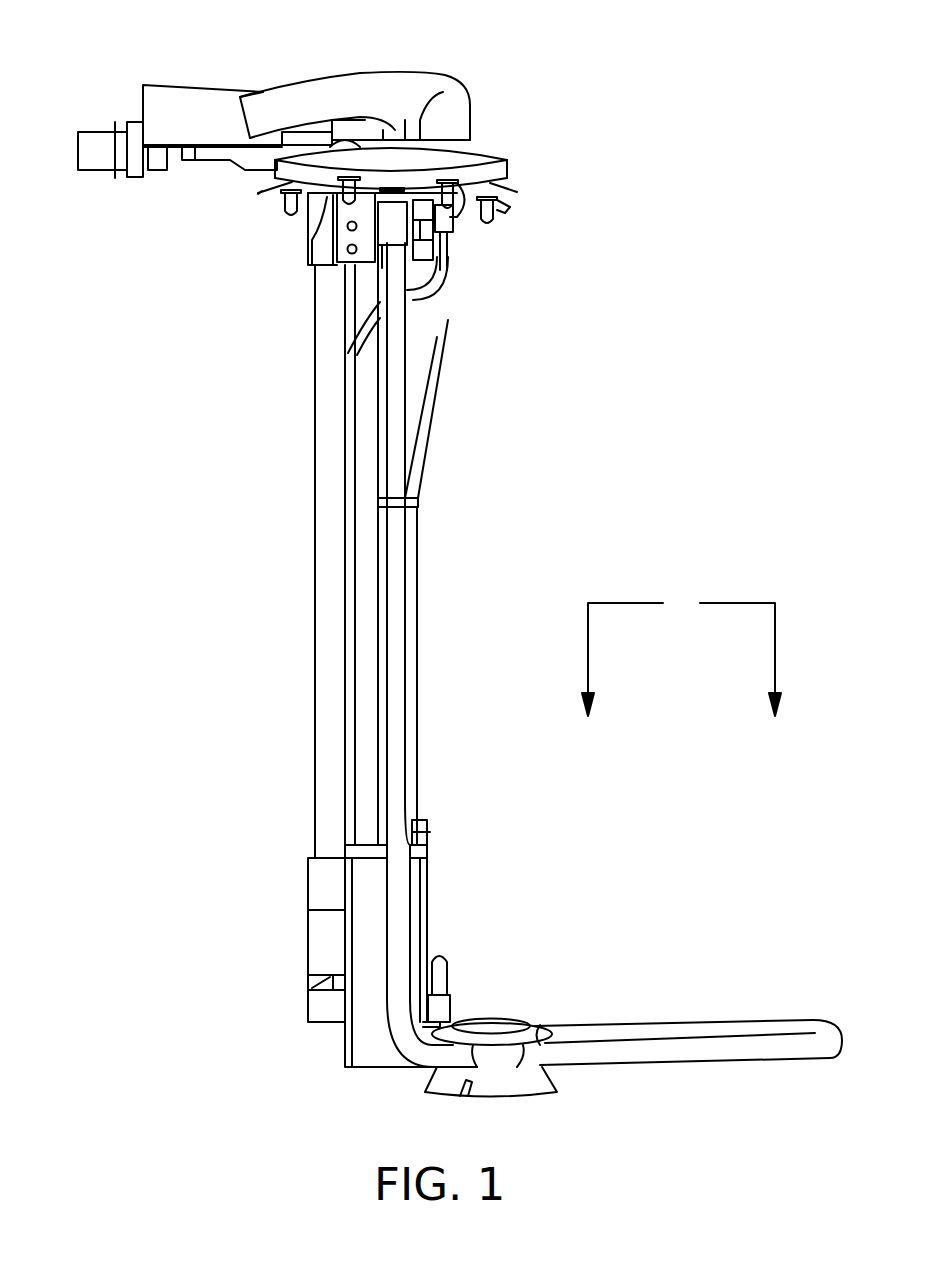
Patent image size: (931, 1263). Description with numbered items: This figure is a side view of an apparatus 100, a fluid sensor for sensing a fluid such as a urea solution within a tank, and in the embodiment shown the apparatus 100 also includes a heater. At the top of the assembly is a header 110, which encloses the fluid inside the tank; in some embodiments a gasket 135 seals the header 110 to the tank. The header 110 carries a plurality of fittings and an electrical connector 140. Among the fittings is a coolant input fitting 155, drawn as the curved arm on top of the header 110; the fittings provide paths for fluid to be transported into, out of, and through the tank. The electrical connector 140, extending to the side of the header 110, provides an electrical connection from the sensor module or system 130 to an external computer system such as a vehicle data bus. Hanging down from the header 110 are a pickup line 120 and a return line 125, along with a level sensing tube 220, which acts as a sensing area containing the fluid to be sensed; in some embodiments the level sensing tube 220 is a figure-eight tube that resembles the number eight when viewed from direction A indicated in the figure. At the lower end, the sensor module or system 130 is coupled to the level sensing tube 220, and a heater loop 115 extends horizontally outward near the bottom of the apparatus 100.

The apparatus 100 is at (607, 78).
The header 110 is at (520, 170).
The heater loop 115 is at (736, 1028).
The pickup line 120 is at (433, 420).
The return line 125 is at (413, 300).
The sensor module or system 130 is at (280, 985).
The gasket 135 is at (508, 183).
The electrical connector 140 is at (93, 132).
The coolant input fitting 155 is at (375, 83).
The level sensing tube 220 is at (315, 700).